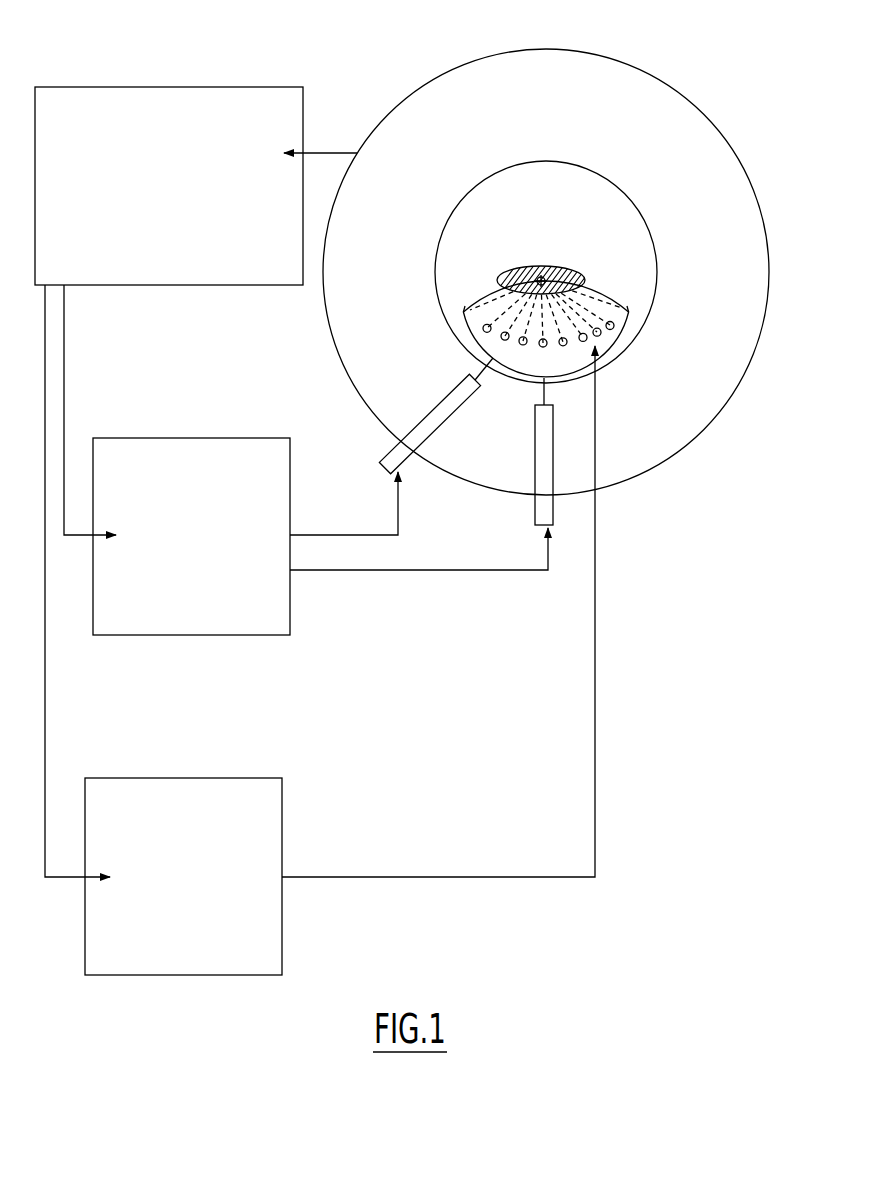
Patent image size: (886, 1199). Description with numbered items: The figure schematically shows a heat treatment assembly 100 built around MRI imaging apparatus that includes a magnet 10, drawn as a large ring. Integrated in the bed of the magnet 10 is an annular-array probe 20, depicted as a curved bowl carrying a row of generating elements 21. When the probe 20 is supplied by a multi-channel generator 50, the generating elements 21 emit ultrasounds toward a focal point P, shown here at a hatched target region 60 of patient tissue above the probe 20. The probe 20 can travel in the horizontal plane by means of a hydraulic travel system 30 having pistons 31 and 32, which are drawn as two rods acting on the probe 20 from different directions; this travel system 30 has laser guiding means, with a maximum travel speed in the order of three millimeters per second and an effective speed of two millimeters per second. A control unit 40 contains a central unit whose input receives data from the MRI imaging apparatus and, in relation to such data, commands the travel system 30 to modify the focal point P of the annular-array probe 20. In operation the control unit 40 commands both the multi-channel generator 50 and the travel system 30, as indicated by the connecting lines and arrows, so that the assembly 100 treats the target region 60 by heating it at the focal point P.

The ultrasound therapy system 100 is at (377, 86).
The magnet 10 is at (642, 105).
The annular-array probe 20 is at (622, 349).
The generating elements 21 is at (613, 341).
The hydraulic travel system 30 is at (163, 463).
The piston 31 is at (388, 458).
The piston 32 is at (542, 503).
The control unit 40 is at (73, 108).
The multi-channel generator 50 is at (193, 952).
The target region 60 is at (586, 274).
The focal point P is at (545, 268).